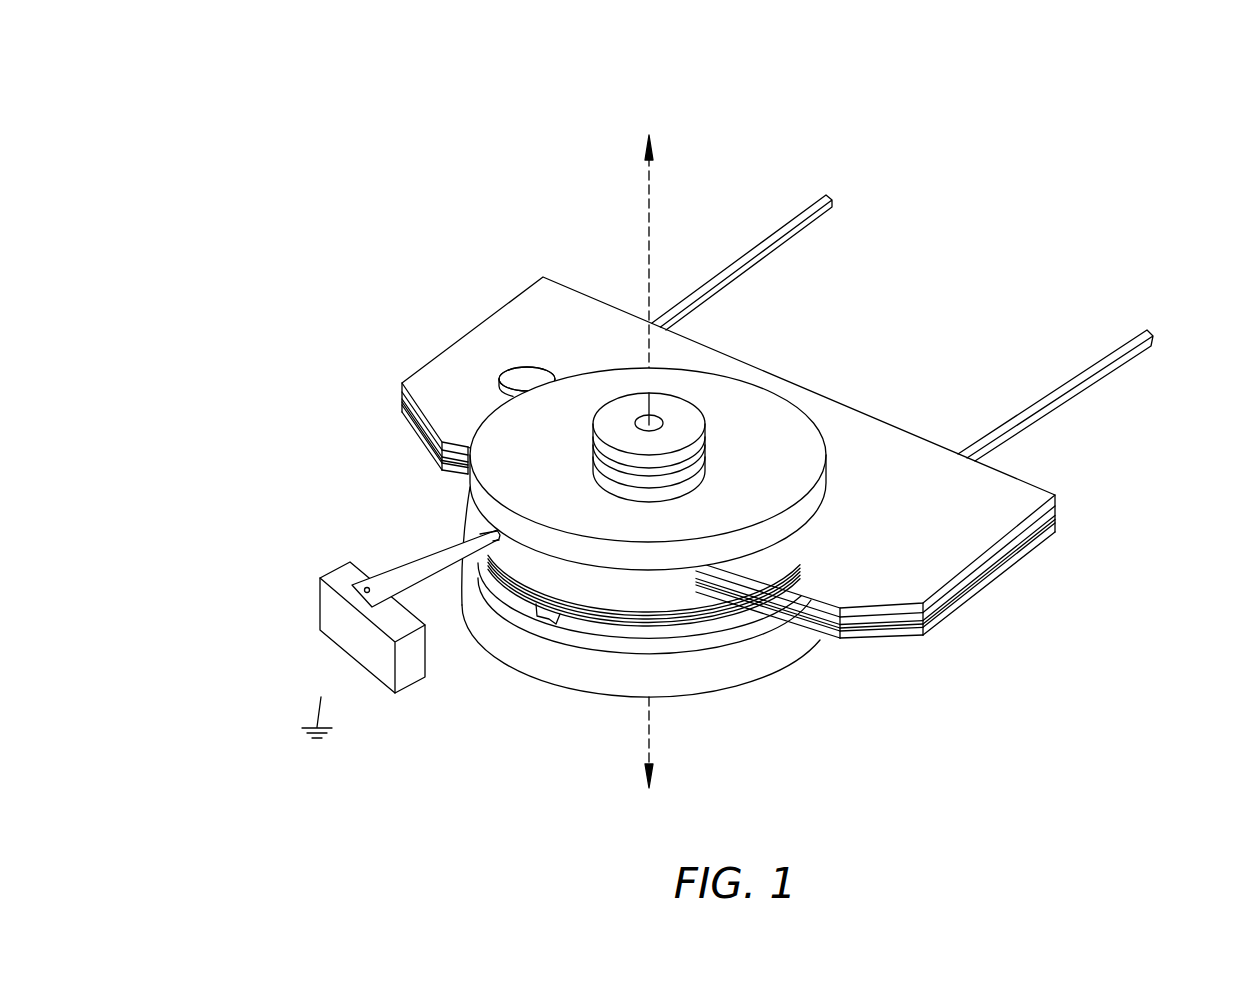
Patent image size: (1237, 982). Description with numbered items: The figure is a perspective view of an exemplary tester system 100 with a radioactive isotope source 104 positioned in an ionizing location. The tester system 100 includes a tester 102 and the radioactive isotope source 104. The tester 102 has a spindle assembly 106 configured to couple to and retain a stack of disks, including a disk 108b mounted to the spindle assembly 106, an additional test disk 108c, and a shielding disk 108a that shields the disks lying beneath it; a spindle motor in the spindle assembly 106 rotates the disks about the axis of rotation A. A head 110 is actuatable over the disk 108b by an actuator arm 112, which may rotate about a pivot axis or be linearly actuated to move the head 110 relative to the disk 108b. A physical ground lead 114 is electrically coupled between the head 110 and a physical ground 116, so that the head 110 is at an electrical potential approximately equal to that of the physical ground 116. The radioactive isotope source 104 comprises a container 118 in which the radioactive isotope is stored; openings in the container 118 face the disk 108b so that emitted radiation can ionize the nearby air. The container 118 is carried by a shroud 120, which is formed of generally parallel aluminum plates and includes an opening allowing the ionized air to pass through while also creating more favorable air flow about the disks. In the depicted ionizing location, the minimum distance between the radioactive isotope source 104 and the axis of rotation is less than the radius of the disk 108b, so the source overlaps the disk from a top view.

The tester system 100 is at (622, 103).
The tester 102 is at (598, 714).
The radioactive isotope source 104 is at (516, 357).
The spindle assembly 106 is at (711, 405).
The shielding disk 108a is at (758, 526).
The disk 108b is at (574, 594).
The disk 108c is at (712, 627).
The head 110 is at (493, 569).
The actuator arm 112 is at (389, 557).
The physical ground lead 114 is at (358, 665).
The physical ground 116 is at (303, 728).
The container 118 is at (500, 380).
The shroud 120 is at (1013, 562).